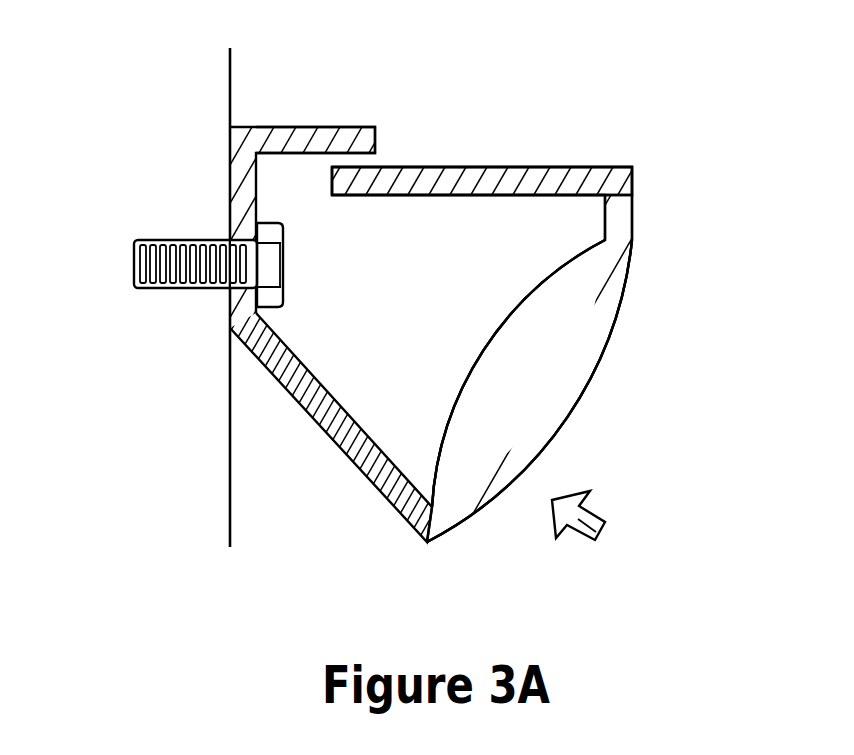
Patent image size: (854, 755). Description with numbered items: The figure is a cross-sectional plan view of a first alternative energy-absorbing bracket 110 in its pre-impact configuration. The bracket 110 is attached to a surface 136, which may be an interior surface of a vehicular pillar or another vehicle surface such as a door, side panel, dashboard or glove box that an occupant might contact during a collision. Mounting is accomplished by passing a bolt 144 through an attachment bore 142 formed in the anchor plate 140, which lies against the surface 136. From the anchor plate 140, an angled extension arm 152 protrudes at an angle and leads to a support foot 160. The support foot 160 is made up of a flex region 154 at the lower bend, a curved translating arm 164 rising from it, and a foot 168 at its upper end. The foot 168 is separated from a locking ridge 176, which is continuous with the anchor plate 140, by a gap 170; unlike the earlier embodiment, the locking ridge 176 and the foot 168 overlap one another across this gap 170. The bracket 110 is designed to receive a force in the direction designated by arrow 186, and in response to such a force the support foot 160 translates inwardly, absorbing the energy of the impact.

The energy-absorbing bracket 110 is at (682, 265).
The surface 136 is at (200, 392).
The anchor plate 140 is at (242, 202).
The attachment bore 142 is at (243, 240).
The bolt 144 is at (148, 263).
The angled extension arm 152 is at (365, 467).
The flex region 154 is at (460, 560).
The support foot 160 is at (654, 332).
The translating arm 164 is at (582, 355).
The foot 168 is at (518, 177).
The gap 170 is at (433, 155).
The locking ridge 176 is at (302, 134).
The arrow 186 is at (598, 538).